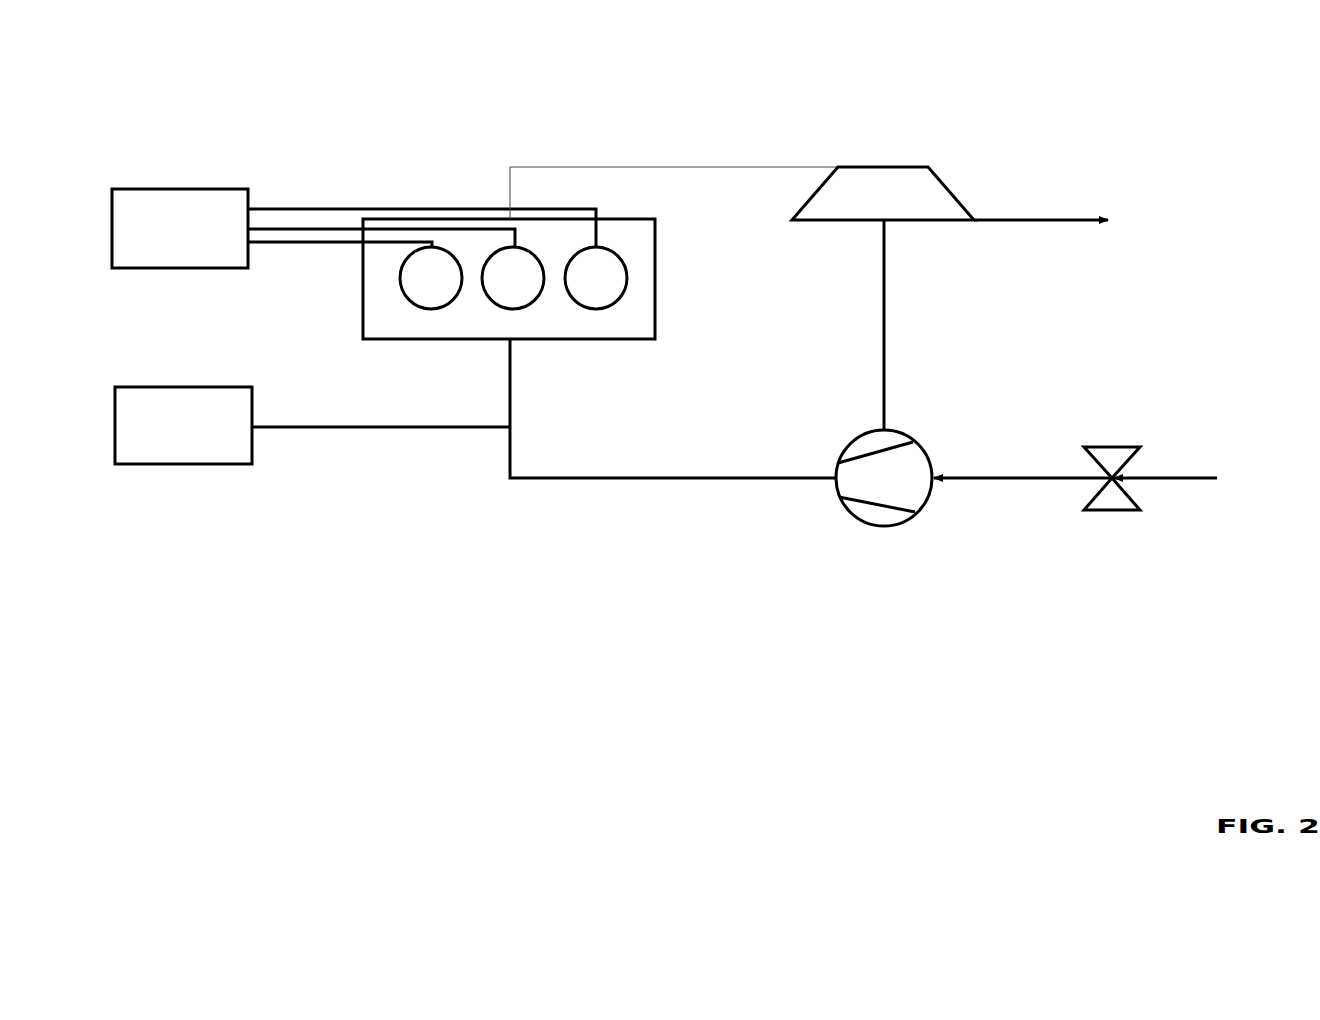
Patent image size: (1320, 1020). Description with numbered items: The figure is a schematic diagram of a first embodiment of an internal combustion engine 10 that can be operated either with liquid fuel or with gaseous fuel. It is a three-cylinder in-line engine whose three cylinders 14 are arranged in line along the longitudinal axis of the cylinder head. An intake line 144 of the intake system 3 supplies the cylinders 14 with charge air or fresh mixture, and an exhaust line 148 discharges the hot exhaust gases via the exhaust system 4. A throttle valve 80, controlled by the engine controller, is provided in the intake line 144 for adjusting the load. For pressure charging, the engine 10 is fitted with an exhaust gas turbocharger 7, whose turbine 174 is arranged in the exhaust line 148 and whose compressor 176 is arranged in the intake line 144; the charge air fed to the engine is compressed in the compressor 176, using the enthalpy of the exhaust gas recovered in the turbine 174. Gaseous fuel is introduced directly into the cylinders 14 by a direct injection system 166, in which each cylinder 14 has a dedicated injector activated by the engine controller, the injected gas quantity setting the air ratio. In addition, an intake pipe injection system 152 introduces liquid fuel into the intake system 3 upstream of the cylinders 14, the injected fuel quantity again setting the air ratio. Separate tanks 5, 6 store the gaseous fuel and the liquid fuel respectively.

The internal combustion engine 10 is at (210, 97).
The exhaust system 4 is at (612, 111).
The intake system 3 is at (555, 553).
The tank 6 is at (150, 203).
The direct injection system 166 is at (356, 208).
The cylinders 14 is at (583, 282).
The tank 5 is at (173, 450).
The intake pipe injection system 152 is at (506, 428).
The intake line 144 is at (713, 478).
The exhaust line 148 is at (760, 165).
The turbine 174 is at (908, 180).
The exhaust gas turbocharger 7 is at (886, 357).
The compressor 176 is at (913, 500).
The throttle valve 80 is at (1108, 453).